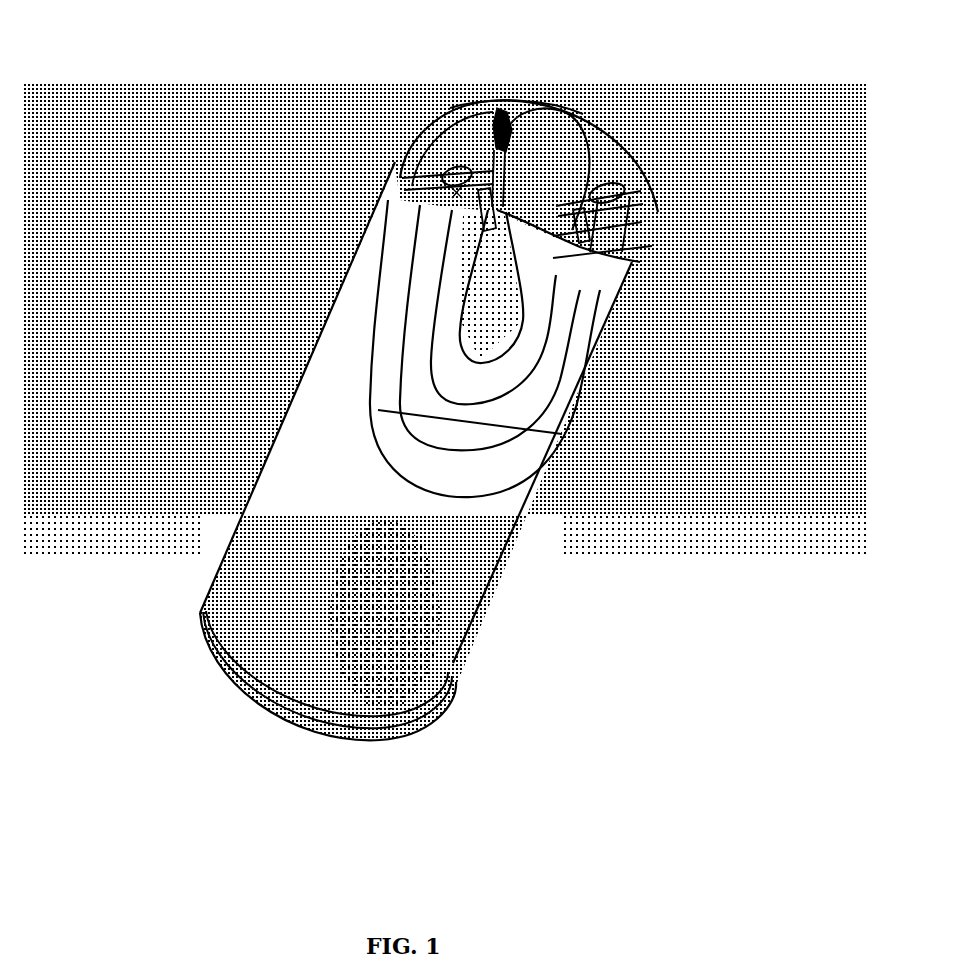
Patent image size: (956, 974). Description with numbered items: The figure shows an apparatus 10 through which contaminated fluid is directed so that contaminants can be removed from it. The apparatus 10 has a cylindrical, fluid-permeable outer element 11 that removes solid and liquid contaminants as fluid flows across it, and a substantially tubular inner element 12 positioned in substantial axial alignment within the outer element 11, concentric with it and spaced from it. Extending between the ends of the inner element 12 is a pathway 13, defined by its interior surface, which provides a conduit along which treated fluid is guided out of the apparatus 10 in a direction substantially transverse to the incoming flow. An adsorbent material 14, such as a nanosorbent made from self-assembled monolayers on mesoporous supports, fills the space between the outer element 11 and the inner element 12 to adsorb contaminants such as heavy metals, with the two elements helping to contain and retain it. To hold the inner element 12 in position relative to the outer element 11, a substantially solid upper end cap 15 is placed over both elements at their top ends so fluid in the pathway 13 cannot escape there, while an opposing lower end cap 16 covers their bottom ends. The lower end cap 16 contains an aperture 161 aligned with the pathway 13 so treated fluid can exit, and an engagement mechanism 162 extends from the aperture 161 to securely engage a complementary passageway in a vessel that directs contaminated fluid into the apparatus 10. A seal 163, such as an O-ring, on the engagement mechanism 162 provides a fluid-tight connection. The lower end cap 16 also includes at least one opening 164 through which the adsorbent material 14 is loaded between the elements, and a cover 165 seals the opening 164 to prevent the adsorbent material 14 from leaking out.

The apparatus 10 is at (348, 103).
The outer element 11 is at (533, 512).
The inner element 12 is at (490, 400).
The pathway 13 is at (506, 331).
The adsorbent material 14 is at (430, 396).
The upper end cap 15 is at (449, 706).
The lower end cap 16 is at (636, 166).
The aperture 161 is at (600, 261).
The engagement mechanism 162 is at (583, 116).
The seal 163 is at (499, 112).
The opening 164 is at (447, 165).
The cover 165 is at (440, 190).